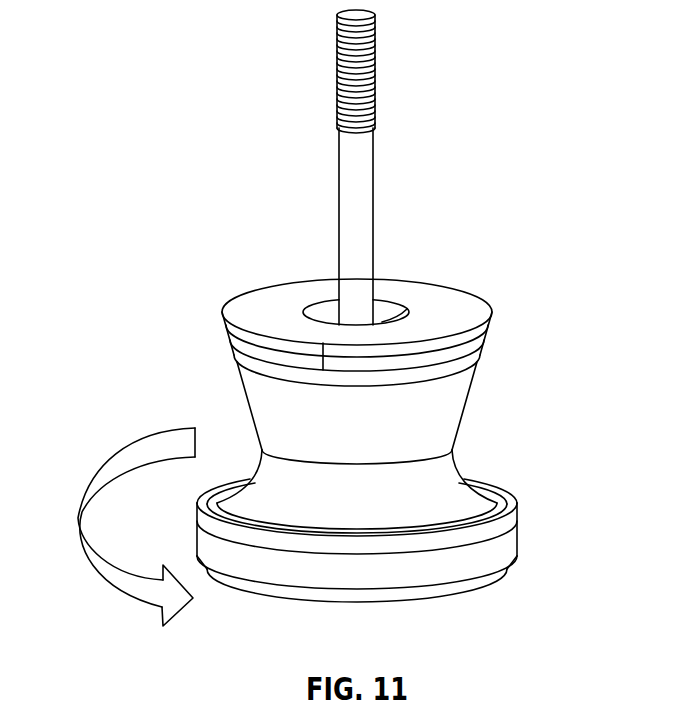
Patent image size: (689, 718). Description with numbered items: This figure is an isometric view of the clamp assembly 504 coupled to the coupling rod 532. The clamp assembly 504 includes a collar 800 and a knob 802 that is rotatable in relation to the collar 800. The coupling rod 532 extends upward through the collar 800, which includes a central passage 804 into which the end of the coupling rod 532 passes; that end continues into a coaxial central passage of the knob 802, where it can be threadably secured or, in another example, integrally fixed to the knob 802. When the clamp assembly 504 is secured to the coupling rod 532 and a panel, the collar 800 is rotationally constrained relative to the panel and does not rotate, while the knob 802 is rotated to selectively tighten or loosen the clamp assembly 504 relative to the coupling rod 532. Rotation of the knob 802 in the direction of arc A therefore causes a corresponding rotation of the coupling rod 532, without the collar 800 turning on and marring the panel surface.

The clamp assembly 504 is at (180, 333).
The coupling rod 532 is at (375, 72).
The collar 800 is at (457, 293).
The knob 802 is at (430, 470).
The central passage 804 is at (392, 300).
The arc A is at (78, 530).